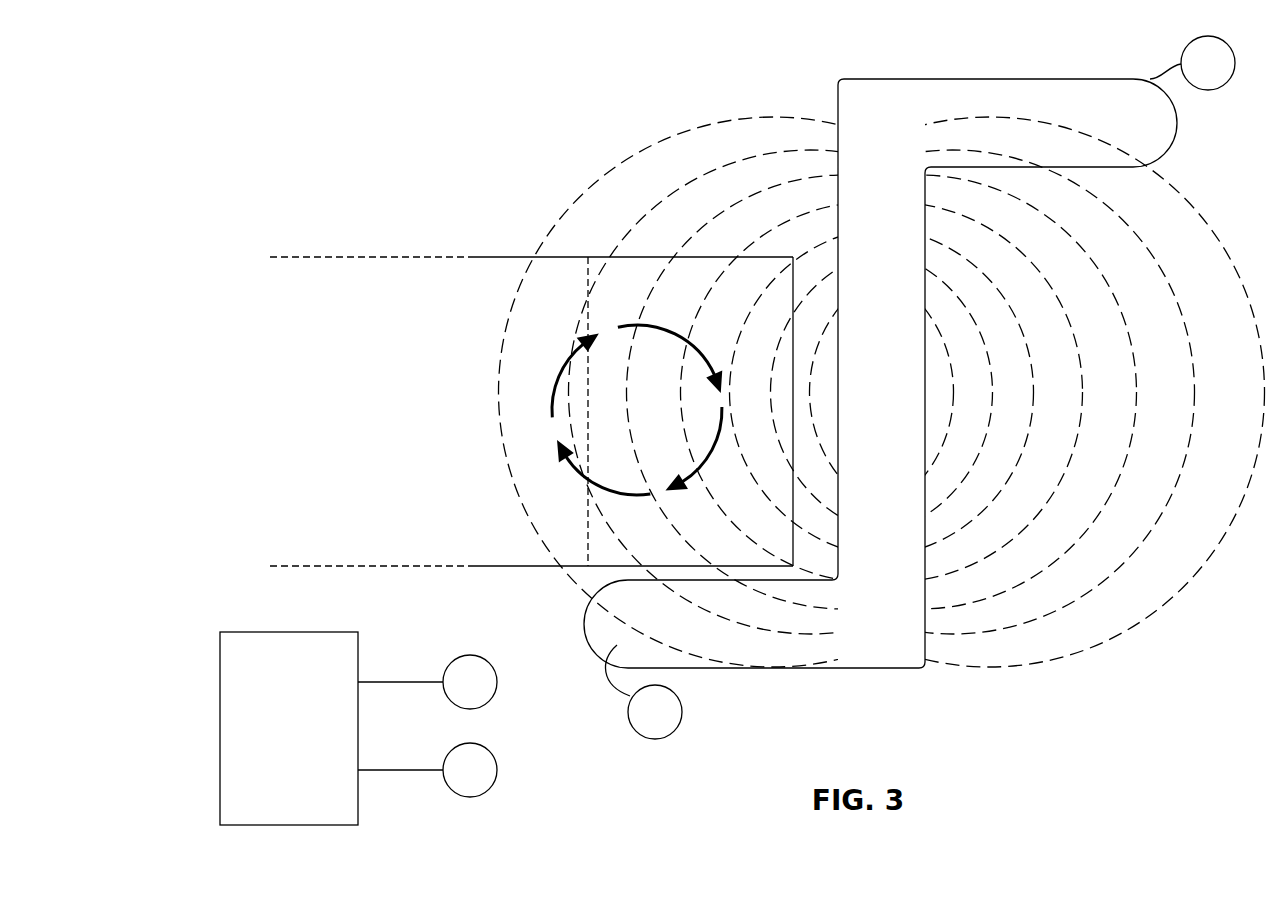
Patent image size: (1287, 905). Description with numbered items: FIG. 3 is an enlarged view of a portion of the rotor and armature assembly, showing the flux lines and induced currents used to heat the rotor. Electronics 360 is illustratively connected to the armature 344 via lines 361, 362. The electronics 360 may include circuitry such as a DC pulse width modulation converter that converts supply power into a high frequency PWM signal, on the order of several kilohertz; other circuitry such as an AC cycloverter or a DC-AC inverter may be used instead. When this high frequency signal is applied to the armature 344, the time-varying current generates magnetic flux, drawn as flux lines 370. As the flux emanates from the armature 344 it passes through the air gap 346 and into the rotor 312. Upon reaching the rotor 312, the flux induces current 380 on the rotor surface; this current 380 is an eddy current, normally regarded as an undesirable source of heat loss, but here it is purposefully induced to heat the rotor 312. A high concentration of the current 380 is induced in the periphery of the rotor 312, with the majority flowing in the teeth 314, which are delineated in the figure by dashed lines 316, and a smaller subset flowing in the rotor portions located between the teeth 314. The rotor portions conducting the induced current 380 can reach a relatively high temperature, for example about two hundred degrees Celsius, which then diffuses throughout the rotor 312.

The rotor 312 is at (531, 255).
The teeth 314 is at (628, 255).
The dashed lines 316 is at (530, 547).
The armature 344 is at (921, 398).
The air gap 346 is at (807, 417).
The electronics 360 is at (340, 630).
The line 361 is at (418, 680).
The line 362 is at (418, 768).
The flux lines 370 is at (828, 477).
The current 380 is at (560, 382).